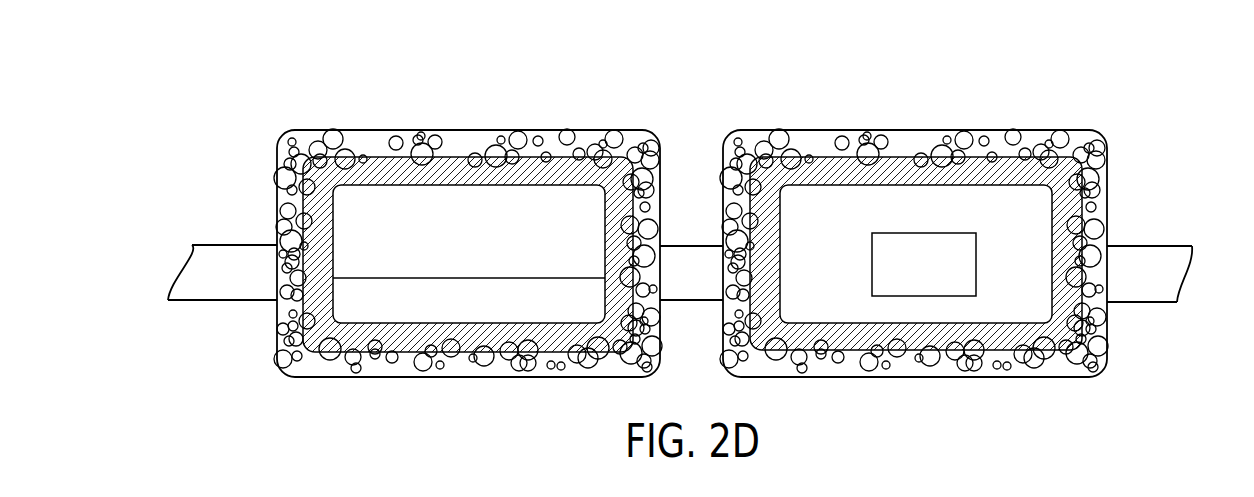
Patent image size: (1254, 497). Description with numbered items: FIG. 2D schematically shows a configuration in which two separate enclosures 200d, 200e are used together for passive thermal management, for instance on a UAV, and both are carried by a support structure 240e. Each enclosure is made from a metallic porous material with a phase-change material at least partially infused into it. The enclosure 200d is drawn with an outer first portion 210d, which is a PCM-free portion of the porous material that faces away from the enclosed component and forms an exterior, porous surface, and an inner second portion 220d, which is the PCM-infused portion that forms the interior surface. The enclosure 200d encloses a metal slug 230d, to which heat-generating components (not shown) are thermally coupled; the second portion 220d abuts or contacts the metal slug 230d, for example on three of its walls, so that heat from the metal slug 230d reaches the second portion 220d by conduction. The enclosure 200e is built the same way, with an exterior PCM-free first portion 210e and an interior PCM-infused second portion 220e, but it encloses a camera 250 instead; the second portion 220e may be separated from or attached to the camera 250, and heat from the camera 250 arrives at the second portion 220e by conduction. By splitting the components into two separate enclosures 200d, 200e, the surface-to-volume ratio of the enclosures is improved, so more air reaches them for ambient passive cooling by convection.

The enclosure 200d is at (214, 105).
The first portion 210d is at (468, 214).
The second portion 220d is at (367, 165).
The metal slug 230d is at (462, 278).
The enclosure 200e is at (1085, 105).
The first portion 210e is at (914, 214).
The second portion 220e is at (815, 167).
The camera 250 is at (912, 233).
The support structure 240e is at (1130, 292).